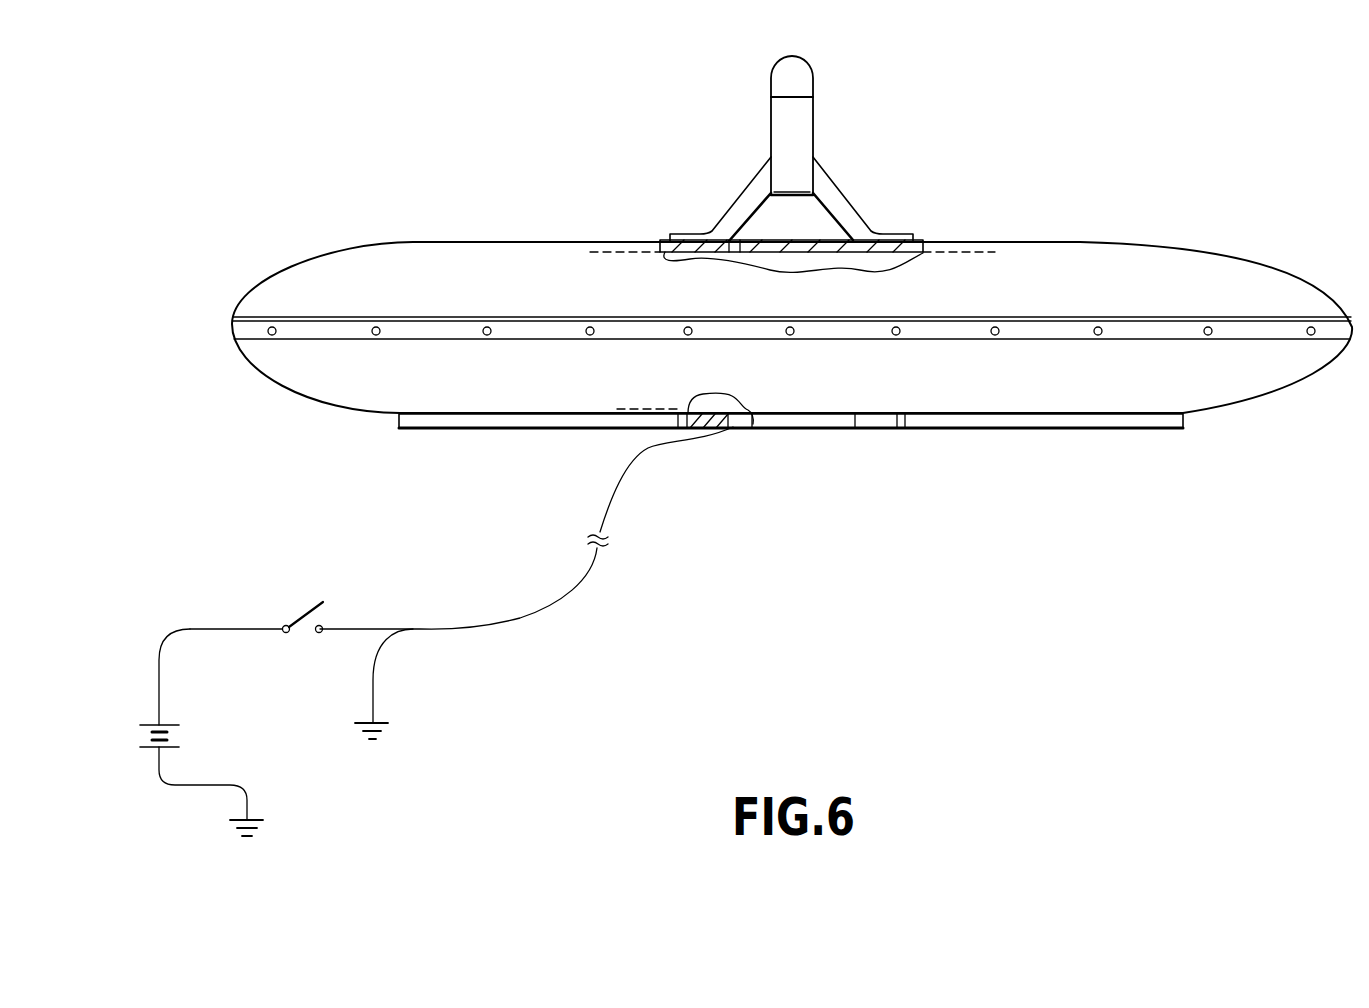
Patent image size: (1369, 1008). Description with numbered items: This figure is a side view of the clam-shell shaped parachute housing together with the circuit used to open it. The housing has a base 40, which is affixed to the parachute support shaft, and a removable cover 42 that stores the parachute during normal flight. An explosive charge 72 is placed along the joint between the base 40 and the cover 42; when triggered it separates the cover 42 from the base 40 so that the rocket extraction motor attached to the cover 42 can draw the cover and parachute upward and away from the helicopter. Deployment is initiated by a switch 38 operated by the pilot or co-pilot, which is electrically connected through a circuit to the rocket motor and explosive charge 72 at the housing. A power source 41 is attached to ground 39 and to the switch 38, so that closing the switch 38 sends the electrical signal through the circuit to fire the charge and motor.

The removable cover 42 is at (333, 254).
The explosive charge 72 is at (483, 335).
The base 40 is at (417, 429).
The switch 38 is at (305, 612).
The battery 41 is at (140, 724).
The ground 39 is at (360, 727).